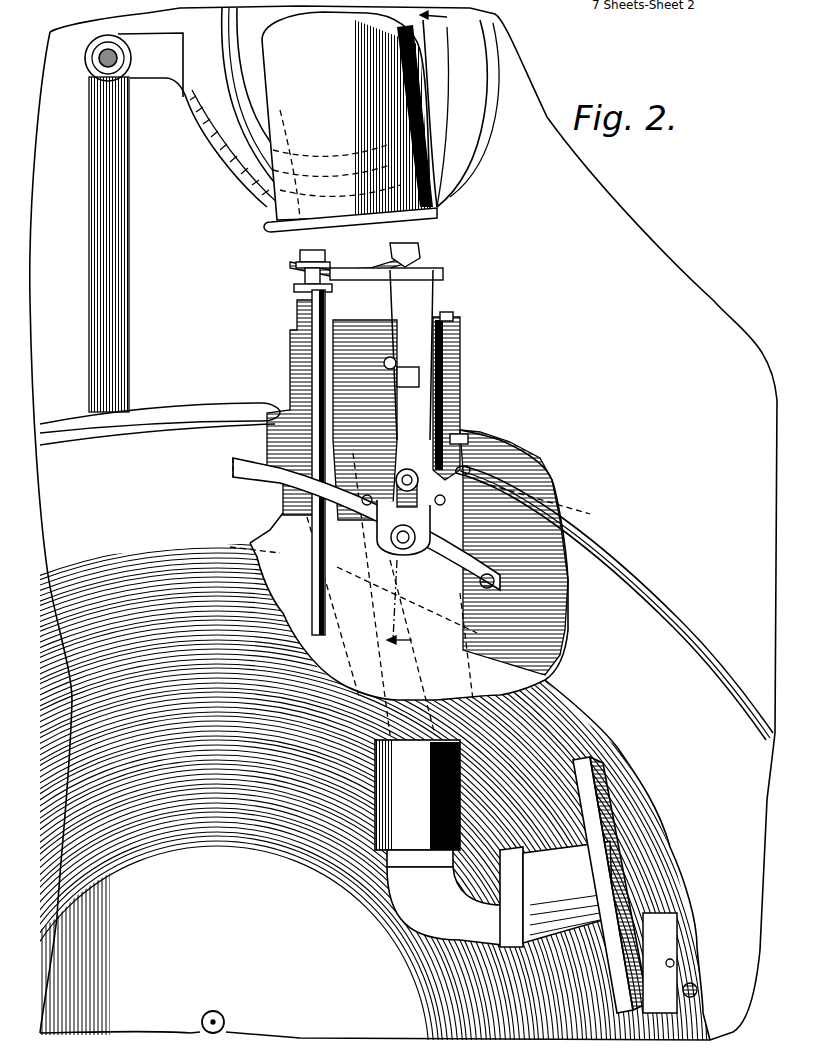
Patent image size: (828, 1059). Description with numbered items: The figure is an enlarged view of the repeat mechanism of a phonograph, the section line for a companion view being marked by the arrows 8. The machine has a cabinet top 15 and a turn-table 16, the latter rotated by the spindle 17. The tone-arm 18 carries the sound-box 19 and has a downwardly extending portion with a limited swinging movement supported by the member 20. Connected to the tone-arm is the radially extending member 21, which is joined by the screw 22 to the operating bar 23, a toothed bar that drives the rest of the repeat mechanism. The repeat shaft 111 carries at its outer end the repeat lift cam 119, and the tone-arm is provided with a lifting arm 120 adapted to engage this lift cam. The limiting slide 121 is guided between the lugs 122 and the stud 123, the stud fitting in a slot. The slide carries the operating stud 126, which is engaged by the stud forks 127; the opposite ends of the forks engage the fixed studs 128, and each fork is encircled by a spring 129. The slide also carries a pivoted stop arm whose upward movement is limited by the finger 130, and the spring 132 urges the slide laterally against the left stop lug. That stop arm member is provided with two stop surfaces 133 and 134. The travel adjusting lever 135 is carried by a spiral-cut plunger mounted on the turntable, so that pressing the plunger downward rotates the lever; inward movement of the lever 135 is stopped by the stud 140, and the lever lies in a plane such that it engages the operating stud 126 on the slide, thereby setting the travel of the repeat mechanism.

The section line 8- 8 is at (417, 333).
The cabinet top 15 is at (616, 398).
The turn-table 16 is at (637, 580).
The spindle 17 is at (213, 1011).
The tone-arm 18 is at (439, 842).
The sound-box 19 is at (603, 843).
The member 20 is at (487, 118).
The radially extending member 21 is at (157, 50).
The screw 22 is at (97, 67).
The operating bar 23 is at (129, 177).
The repeat shaft 111 is at (310, 573).
The repeat lift cam 119 is at (320, 282).
The lifting arm 120 is at (440, 184).
The limiting slide 121 is at (420, 427).
The lugs 122 is at (447, 312).
The stud 123 is at (450, 607).
The operating stud 126 is at (462, 440).
The stud forks 127 is at (470, 469).
The fixed studs 128 is at (448, 503).
The spring 129 is at (443, 277).
The finger 130 is at (398, 383).
The spring 132 is at (455, 363).
The stop surface 133 is at (410, 257).
The stop surface 134 is at (440, 222).
The travel adjusting lever 135 is at (470, 543).
The stud 140 is at (494, 583).